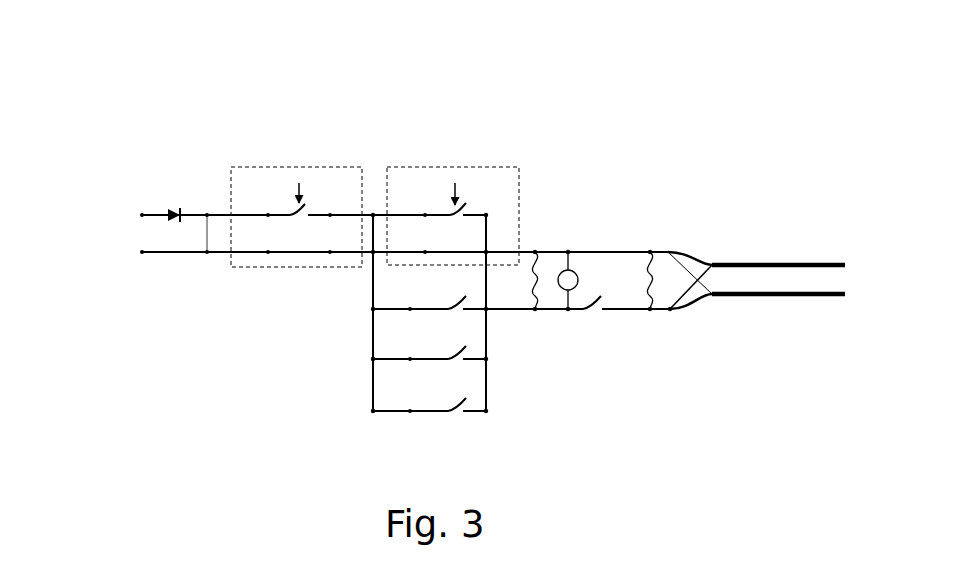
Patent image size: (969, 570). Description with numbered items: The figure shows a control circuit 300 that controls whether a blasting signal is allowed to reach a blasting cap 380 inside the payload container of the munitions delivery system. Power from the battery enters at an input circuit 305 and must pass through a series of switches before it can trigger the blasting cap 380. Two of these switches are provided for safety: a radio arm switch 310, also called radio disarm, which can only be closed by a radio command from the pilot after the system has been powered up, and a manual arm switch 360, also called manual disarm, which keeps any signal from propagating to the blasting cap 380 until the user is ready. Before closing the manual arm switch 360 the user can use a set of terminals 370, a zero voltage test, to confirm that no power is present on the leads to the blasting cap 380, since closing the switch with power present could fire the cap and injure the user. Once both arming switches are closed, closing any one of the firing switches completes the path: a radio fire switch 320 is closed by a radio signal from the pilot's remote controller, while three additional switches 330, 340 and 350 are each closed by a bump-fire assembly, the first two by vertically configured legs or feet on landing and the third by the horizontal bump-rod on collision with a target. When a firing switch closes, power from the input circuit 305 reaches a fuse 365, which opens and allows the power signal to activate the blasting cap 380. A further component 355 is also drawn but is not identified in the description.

The control circuit 300 is at (406, 215).
The input circuit 305 is at (120, 232).
The radio arm switch 310 is at (255, 143).
The radio fire switch 320 is at (483, 133).
The bump-fire switch 330 is at (474, 318).
The bump-fire switch 340 is at (474, 368).
The bump-fire switch 350 is at (474, 418).
The test resistor 355 is at (548, 307).
The manual arm switch 360 is at (607, 318).
The fuse 365 is at (660, 266).
The set of terminals 370 is at (597, 210).
The blasting cap 380 is at (783, 253).